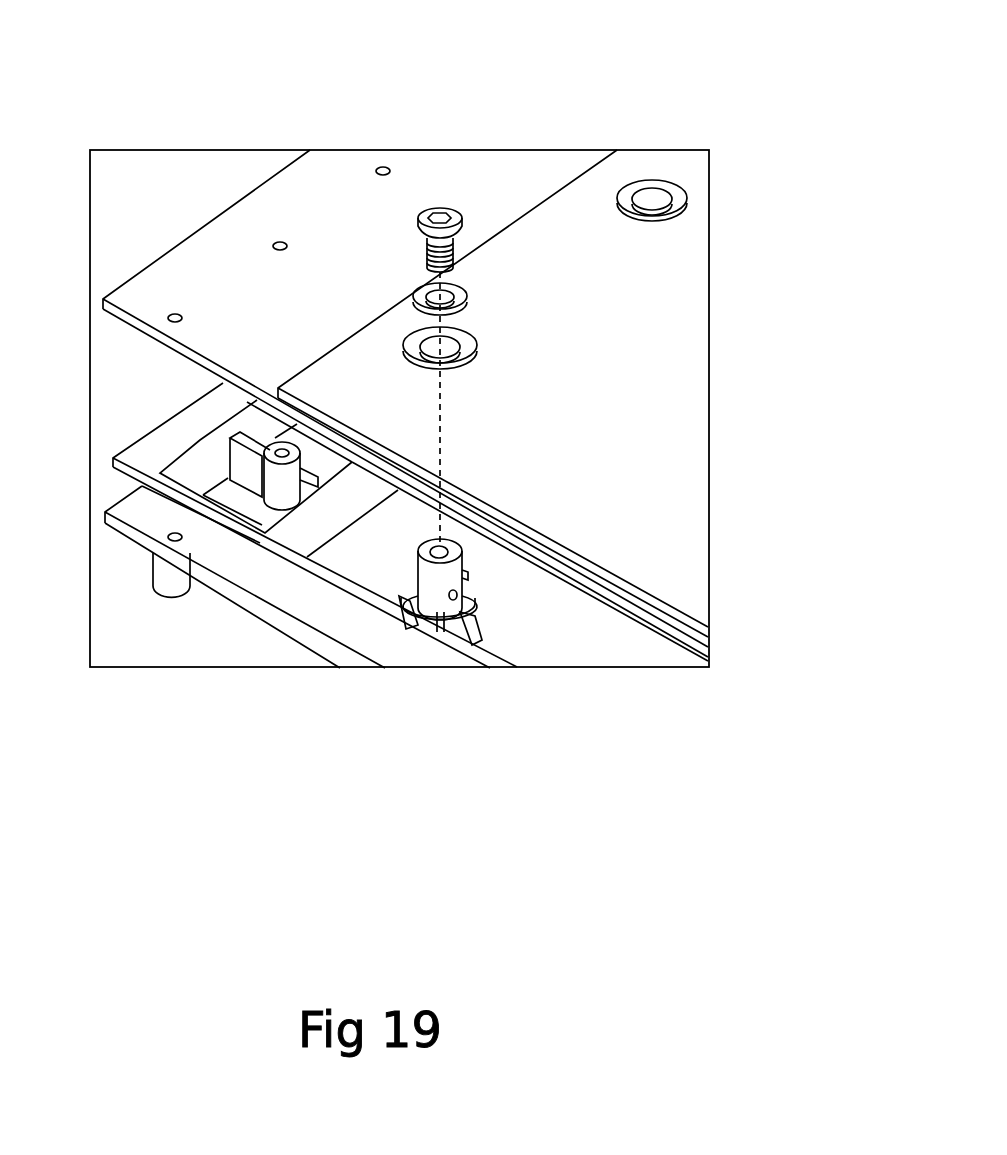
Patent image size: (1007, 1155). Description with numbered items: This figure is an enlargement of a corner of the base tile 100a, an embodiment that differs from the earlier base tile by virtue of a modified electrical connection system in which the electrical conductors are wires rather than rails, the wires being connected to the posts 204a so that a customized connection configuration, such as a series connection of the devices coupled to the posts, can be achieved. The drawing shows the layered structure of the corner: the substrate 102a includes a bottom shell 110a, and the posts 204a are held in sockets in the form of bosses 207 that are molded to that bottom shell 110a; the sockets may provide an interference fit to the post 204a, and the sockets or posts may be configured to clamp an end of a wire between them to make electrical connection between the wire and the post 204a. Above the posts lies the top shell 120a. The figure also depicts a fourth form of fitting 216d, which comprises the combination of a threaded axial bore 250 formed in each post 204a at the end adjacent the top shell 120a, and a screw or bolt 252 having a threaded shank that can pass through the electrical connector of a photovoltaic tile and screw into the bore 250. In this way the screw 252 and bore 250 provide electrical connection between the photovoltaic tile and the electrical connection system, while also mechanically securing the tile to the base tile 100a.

The base tile 100a is at (592, 124).
The top shell 120a is at (213, 279).
The fitting 216d is at (514, 390).
The screw or bolt 252 is at (433, 212).
The threaded axial bore 250 is at (441, 550).
The post 204a is at (446, 583).
The boss 207 is at (438, 622).
The substrate 102a is at (145, 620).
The bottom shell 110a is at (275, 615).